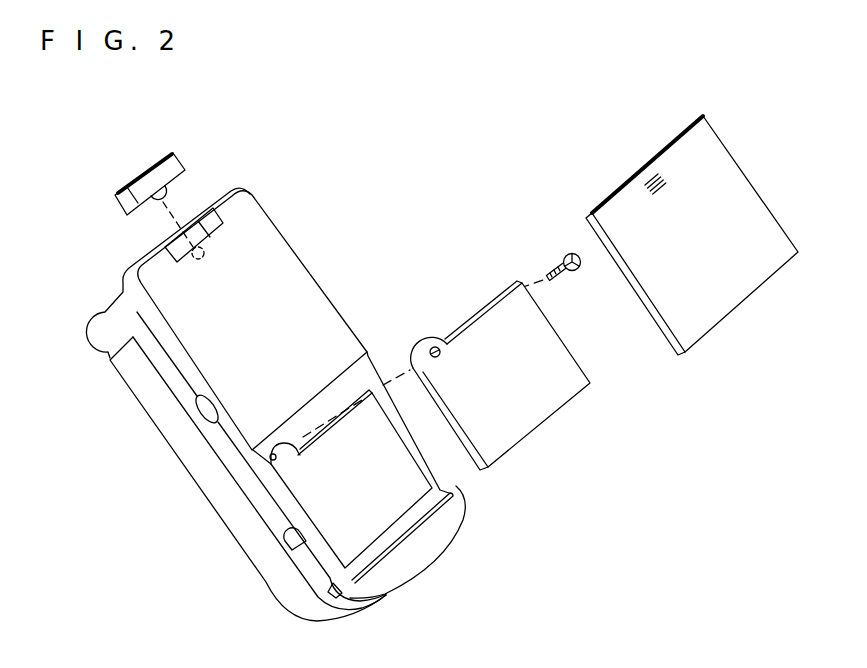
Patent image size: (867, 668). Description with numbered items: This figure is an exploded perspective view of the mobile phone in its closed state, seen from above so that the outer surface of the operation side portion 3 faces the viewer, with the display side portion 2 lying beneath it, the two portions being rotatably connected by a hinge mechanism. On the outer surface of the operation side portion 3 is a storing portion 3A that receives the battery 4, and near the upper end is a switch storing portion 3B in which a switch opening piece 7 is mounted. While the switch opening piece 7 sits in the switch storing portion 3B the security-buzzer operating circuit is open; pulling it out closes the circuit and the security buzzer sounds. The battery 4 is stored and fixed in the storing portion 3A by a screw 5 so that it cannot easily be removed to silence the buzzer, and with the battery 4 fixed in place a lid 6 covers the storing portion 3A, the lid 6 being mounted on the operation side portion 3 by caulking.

The display side portion 2 is at (181, 457).
The operation side portion 3 is at (292, 273).
The storing portion 3A is at (375, 513).
The switch storing portion 3B is at (195, 232).
The battery 4 is at (535, 413).
The screw 5 is at (557, 262).
The lid 6 is at (727, 298).
The switch opening piece 7 is at (157, 172).